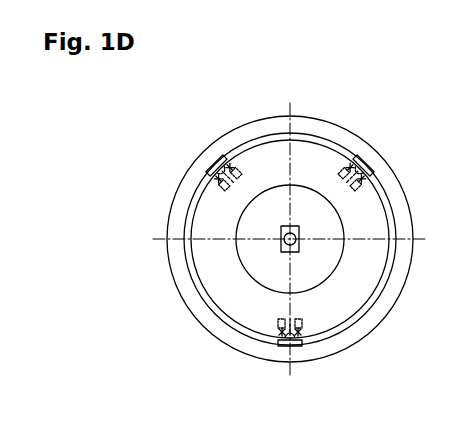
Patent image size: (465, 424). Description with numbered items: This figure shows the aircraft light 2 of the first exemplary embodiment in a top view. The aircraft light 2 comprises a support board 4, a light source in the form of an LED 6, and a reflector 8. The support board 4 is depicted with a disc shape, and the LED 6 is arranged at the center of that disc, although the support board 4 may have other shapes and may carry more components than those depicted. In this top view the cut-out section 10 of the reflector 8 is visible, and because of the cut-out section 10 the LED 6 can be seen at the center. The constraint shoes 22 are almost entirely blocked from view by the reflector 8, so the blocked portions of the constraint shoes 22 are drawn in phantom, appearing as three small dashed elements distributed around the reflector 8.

The aircraft light 2 is at (142, 348).
The support board 4 is at (377, 326).
The LED 6 is at (281, 246).
The reflector 8 is at (385, 291).
The cut-out section 10 is at (328, 217).
The constraint shoes 22 is at (222, 158).